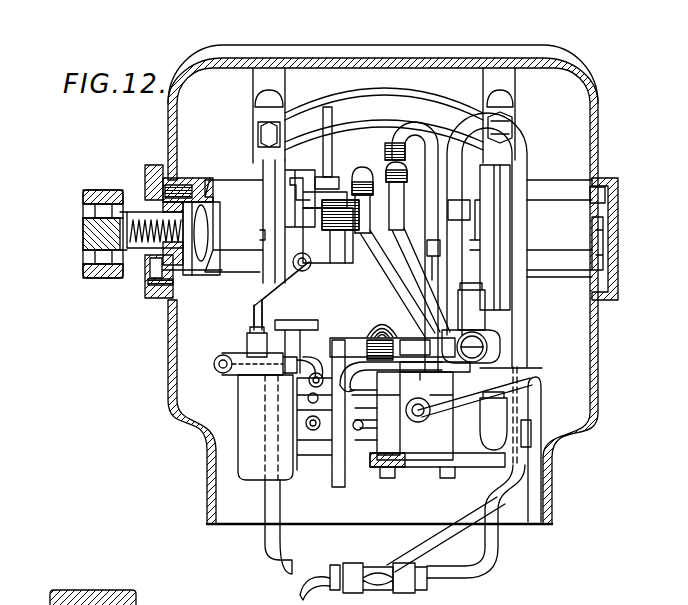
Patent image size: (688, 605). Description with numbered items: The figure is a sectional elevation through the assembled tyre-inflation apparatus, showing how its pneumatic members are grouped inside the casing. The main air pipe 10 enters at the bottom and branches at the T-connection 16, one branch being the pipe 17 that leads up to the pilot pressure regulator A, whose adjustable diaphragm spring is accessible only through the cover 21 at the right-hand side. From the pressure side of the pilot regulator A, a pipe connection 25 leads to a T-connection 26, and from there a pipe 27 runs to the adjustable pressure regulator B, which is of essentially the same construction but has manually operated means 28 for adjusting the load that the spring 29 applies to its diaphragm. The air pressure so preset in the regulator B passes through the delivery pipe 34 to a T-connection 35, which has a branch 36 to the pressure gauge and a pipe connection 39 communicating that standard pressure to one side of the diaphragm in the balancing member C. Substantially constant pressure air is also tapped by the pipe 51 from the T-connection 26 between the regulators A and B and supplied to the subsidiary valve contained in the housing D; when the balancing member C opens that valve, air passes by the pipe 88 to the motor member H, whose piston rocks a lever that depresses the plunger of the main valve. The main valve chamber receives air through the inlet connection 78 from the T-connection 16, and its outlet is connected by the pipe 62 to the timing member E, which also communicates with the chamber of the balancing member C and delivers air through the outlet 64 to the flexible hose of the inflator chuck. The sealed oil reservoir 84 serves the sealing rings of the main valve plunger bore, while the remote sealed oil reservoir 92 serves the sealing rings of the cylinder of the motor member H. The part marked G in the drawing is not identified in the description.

The main air pipe 10 is at (322, 582).
The T-connection 16 is at (385, 575).
The pipe 17 is at (523, 173).
The cover 21 is at (604, 187).
The pipe connection 25 is at (435, 248).
The T-connection 26 is at (379, 197).
The pipe 27 is at (354, 168).
The manually operated means 28 is at (112, 278).
The spring 29 is at (206, 268).
The delivery pipe 34 is at (323, 270).
The T-connection 35 is at (240, 340).
The branch 36 is at (213, 363).
The pipe connection 39 is at (307, 372).
The pipe 51 is at (417, 130).
The pipe 62 is at (363, 340).
The outlet 64 is at (273, 508).
The inlet connection 78 is at (412, 560).
The sealed oil reservoir 84 is at (331, 231).
The pipe 88 is at (517, 368).
The sealed oil reservoir 92 is at (397, 210).
The pilot pressure regulator A is at (502, 212).
The adjustable pressure regulator B is at (270, 225).
The balancing member C is at (335, 473).
The housing D is at (403, 418).
The timing member E is at (471, 323).
The bracket G is at (528, 408).
The motor member H is at (480, 440).